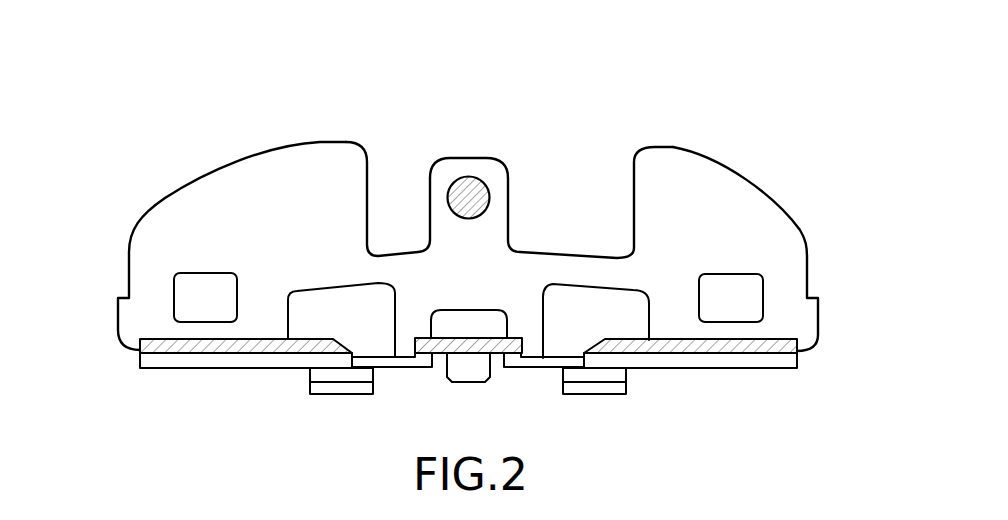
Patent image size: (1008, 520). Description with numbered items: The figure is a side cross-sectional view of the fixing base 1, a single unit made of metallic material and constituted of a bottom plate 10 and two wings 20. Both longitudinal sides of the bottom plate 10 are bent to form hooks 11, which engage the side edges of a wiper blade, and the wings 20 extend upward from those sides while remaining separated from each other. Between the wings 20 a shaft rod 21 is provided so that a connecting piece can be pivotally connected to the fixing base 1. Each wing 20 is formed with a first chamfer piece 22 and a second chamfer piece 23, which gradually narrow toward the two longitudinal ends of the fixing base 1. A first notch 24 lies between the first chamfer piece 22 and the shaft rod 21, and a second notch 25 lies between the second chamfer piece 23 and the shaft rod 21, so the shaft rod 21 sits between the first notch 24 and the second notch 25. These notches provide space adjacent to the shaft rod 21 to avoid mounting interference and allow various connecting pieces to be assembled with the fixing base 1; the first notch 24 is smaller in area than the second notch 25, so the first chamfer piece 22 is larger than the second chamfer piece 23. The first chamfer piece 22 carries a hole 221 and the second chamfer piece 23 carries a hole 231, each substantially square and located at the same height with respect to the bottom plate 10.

The fixing base 1 is at (476, 63).
The bottom plate 10 is at (725, 347).
The hook 11 is at (600, 387).
The wing 20 is at (750, 170).
The shaft rod 21 is at (468, 197).
The first chamfer piece 22 is at (173, 215).
The second chamfer piece 23 is at (763, 215).
The first notch 24 is at (398, 173).
The second notch 25 is at (577, 175).
The hole 221 is at (190, 288).
The hole 231 is at (748, 288).